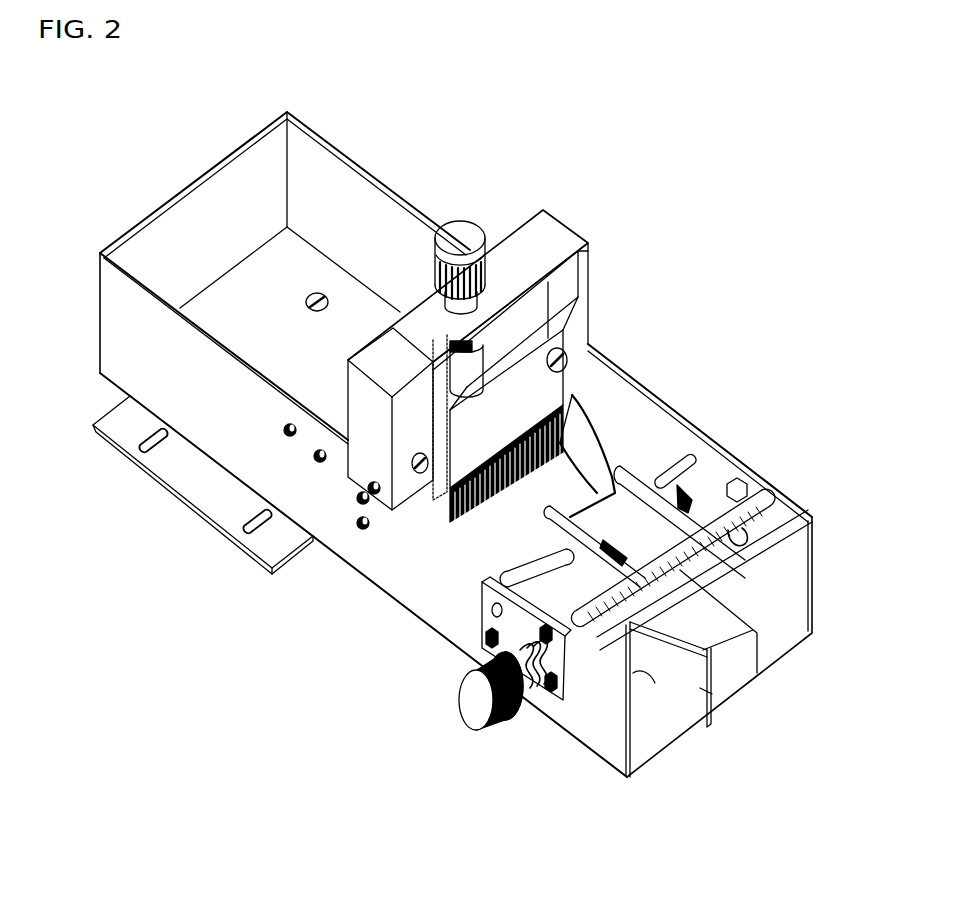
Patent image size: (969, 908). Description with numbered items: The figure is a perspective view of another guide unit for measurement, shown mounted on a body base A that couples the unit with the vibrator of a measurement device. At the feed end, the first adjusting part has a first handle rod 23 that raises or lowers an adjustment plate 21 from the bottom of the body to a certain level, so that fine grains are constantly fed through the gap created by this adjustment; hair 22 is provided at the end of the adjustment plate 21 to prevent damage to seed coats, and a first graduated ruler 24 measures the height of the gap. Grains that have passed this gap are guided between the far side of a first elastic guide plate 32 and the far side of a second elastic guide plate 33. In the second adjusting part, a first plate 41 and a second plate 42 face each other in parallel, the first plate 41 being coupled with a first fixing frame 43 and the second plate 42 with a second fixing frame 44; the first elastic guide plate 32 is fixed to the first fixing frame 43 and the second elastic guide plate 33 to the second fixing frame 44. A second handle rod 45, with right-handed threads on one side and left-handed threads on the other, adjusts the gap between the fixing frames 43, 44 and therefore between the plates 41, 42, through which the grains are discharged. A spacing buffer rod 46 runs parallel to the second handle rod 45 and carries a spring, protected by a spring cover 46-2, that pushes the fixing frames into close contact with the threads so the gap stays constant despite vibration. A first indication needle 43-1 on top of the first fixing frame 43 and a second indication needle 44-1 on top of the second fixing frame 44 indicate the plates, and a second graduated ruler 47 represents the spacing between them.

The body base A is at (201, 492).
The adjustment plate 21 is at (590, 338).
The hair 22 is at (597, 395).
The first handle rod 23 is at (460, 226).
The first graduated ruler 24 is at (400, 312).
The first elastic guide plate 32 is at (602, 433).
The second elastic guide plate 33 is at (547, 553).
The first plate 41 is at (760, 647).
The second plate 42 is at (725, 692).
The first fixing frame 43 is at (693, 500).
The first indication needle 43-1 is at (737, 478).
The second fixing frame 44 is at (582, 640).
The second indication needle 44-1 is at (712, 694).
The second handle rod 45 is at (470, 710).
The spacing buffer rod 46 is at (480, 623).
The spring cover 46-2 is at (668, 475).
The second graduated ruler 47 is at (758, 478).